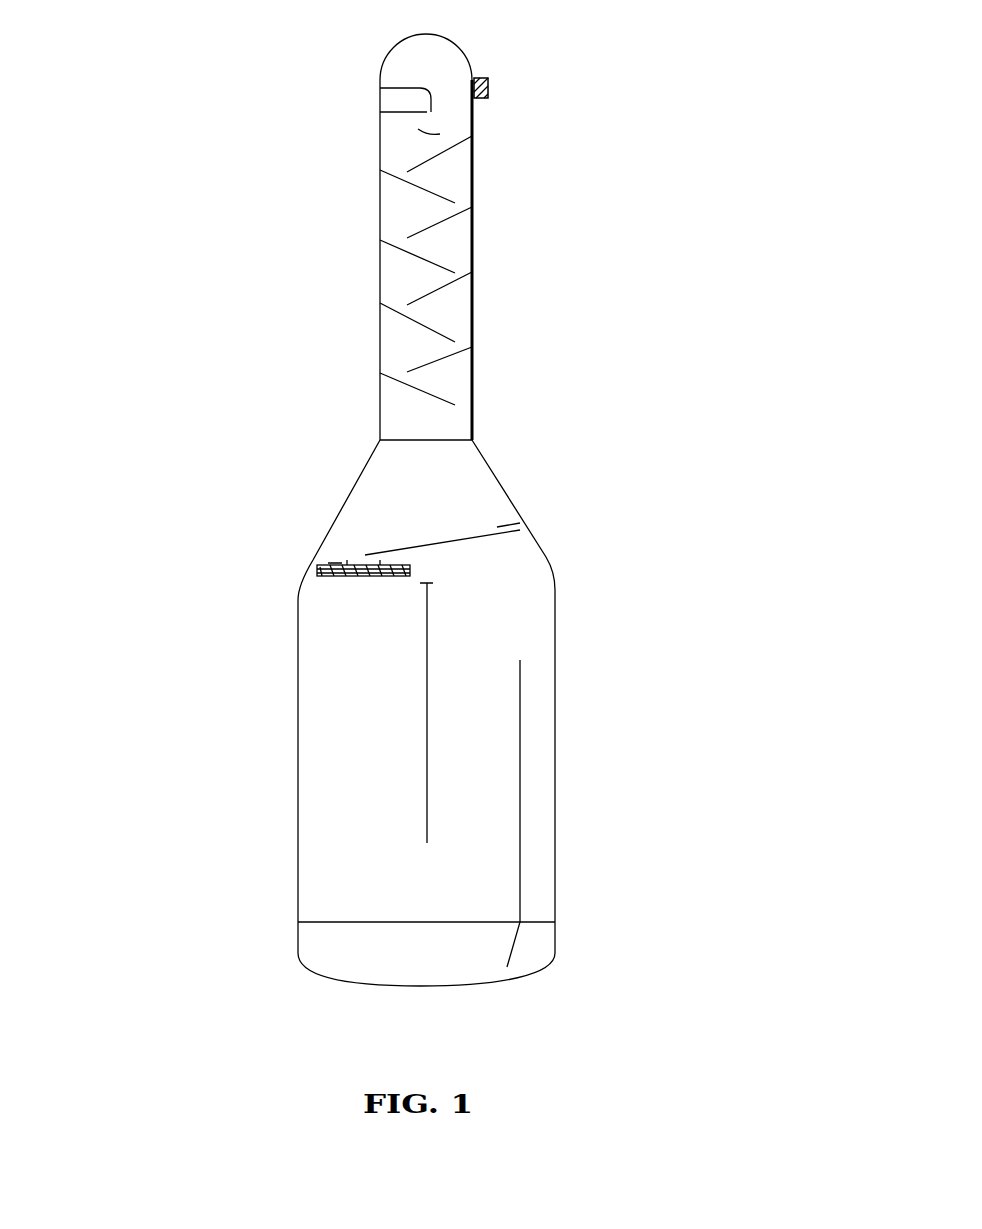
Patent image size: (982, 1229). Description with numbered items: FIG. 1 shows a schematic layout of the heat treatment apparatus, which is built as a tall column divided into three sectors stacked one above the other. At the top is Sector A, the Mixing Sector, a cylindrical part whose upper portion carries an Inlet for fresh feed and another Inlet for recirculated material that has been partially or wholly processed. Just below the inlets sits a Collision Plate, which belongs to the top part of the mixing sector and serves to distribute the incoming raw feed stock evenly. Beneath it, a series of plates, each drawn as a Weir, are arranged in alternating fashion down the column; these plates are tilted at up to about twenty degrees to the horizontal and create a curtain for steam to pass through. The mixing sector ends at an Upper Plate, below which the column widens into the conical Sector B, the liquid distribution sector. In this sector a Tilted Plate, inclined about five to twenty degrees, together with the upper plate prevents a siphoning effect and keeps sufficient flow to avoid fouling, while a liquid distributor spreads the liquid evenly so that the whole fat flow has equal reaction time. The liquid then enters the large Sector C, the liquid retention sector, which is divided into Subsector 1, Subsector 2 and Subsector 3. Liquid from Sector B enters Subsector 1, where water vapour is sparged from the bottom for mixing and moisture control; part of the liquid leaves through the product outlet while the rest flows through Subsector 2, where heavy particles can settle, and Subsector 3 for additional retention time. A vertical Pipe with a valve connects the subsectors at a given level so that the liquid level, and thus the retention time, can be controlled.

The inlet Inlet is at (400, 85).
The element Sector A is at (454, 237).
The mixing sector Mixing Sector is at (548, 160).
The collision plate Collision Plate is at (430, 130).
The weir Weir is at (505, 193).
The upper plate Upper Plate is at (430, 440).
The element Sector B is at (338, 433).
The tilted plate Tilted Plate is at (457, 540).
The element Sector C is at (434, 748).
The subsector 1 Subsector 1 is at (313, 777).
The subsector 2 Subsector 2 is at (468, 658).
The subsector 3 Subsector 3 is at (538, 755).
The pipe Pipe is at (430, 703).